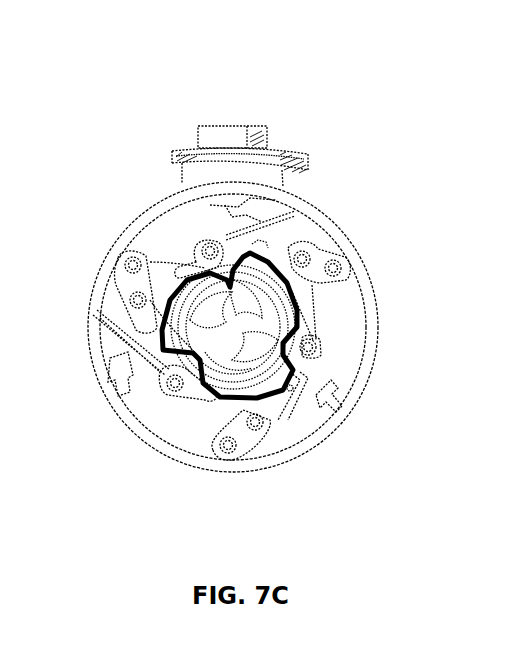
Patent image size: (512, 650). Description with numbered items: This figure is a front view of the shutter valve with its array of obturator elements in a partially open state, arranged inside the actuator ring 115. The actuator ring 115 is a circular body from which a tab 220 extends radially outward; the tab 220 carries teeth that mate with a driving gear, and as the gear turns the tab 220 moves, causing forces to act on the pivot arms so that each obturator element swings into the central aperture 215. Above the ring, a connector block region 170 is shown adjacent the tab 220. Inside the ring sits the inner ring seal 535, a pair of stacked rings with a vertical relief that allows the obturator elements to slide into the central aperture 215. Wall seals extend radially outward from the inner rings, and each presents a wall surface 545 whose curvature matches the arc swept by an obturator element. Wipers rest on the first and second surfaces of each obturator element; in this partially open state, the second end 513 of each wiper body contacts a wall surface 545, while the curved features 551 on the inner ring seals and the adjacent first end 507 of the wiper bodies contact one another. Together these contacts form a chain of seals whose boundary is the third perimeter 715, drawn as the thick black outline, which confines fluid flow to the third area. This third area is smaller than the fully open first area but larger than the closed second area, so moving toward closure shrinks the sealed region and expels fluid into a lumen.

The actuator ring 115 is at (305, 208).
The connector block 170 is at (283, 145).
The tab 220 is at (198, 174).
The perimeter of a third area 715 is at (183, 272).
The surface of the wall seal 545 is at (293, 227).
The inner ring seal 535 is at (273, 302).
The central aperture 215 is at (231, 338).
The second end of the wiper 513 is at (261, 236).
The first end of the wiper 507 is at (321, 358).
The curved features 551 is at (320, 360).